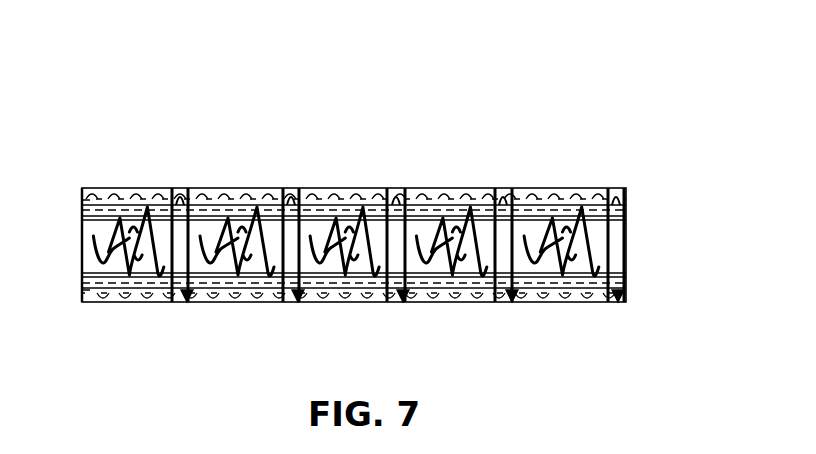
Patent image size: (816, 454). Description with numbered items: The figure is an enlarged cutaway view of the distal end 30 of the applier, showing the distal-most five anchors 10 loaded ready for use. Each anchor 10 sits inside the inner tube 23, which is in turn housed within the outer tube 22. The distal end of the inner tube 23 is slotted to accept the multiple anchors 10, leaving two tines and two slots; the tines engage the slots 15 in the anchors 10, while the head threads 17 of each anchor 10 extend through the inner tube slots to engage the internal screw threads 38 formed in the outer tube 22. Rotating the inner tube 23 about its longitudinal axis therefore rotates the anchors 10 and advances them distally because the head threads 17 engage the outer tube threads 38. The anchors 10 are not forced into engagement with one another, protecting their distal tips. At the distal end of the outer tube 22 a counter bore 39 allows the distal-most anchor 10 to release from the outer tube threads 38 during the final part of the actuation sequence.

The anchor 10 is at (137, 222).
The threaded sections 15 is at (185, 228).
The head threads 17 is at (172, 203).
The outer tube 22 is at (452, 208).
The inner tube 23 is at (345, 222).
The distal end 30 is at (305, 105).
The internal screw threads 38 is at (257, 302).
The counter bore 39 is at (83, 302).